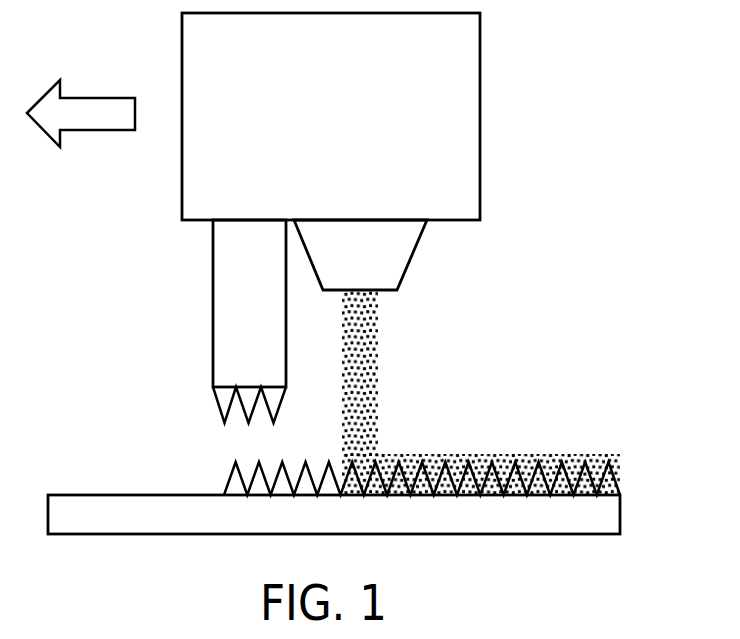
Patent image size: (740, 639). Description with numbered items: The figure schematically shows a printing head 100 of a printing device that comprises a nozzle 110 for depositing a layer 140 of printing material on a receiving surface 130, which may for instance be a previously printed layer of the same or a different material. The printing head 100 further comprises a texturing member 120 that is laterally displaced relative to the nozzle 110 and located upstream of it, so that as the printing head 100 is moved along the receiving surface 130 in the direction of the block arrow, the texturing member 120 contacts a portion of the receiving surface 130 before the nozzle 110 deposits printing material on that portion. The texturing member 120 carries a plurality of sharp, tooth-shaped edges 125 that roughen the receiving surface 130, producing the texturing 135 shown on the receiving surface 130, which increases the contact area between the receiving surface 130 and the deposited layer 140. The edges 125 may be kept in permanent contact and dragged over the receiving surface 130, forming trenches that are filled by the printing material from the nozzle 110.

The printing head 100 is at (480, 147).
The nozzle 110 is at (411, 258).
The texturing member 120 is at (213, 258).
The edges 125 is at (222, 400).
The receiving surface 130 is at (608, 515).
The texturing 135 is at (240, 484).
The layer of printing material 140 is at (525, 455).